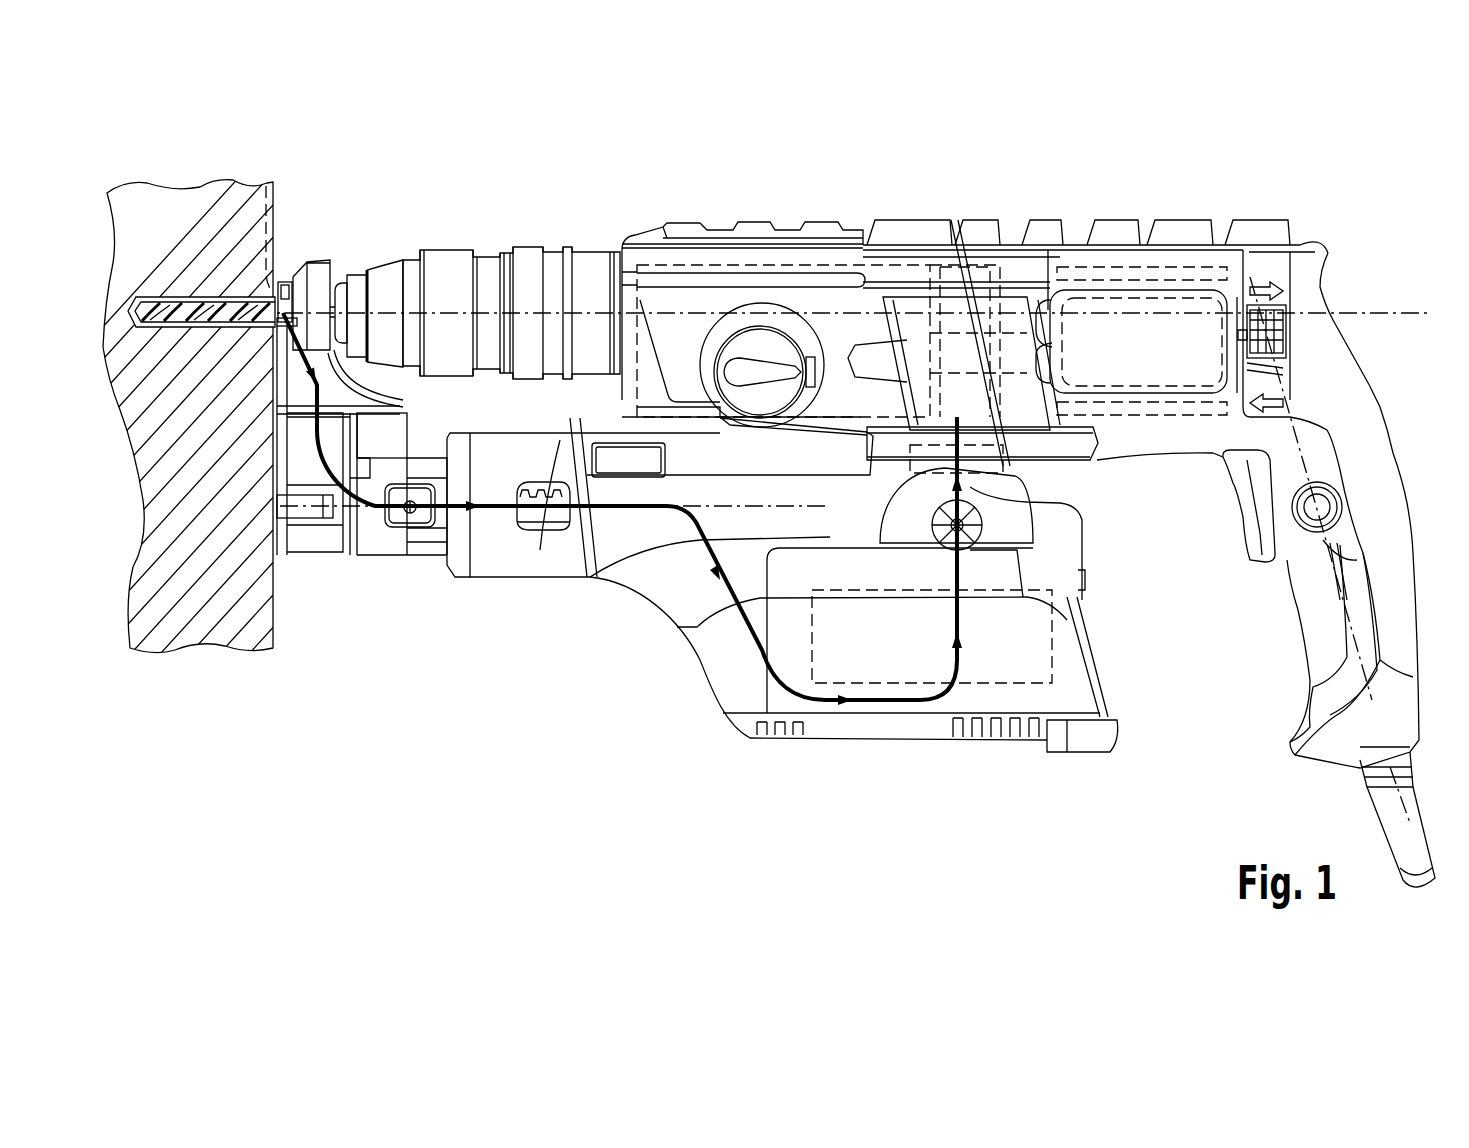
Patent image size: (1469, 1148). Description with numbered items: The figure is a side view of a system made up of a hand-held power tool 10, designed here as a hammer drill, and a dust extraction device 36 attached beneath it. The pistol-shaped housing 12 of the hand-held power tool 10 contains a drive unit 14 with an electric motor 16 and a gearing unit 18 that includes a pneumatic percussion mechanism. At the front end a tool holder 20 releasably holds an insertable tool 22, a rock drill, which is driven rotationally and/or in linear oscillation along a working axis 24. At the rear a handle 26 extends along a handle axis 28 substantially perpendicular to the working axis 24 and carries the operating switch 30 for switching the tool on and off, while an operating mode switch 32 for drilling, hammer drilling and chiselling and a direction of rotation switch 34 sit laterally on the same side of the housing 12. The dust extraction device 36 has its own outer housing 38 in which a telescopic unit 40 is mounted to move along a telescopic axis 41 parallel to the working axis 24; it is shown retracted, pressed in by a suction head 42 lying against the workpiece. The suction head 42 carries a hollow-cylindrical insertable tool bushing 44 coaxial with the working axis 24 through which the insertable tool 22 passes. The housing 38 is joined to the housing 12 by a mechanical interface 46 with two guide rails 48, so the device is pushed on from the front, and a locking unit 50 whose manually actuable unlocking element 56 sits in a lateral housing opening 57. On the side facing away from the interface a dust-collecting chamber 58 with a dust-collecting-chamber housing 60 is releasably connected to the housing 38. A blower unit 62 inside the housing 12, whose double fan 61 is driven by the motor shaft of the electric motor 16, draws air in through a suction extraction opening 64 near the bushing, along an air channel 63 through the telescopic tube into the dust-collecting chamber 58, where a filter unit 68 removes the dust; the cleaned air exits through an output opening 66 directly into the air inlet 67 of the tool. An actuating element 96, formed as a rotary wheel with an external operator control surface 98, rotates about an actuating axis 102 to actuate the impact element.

The hand-held power tool 10 is at (1364, 160).
The housing 12 is at (1015, 240).
The drive unit 14 is at (1075, 240).
The electric motor 16 is at (1152, 290).
The gearing unit 18 is at (803, 258).
The tool holder 20 is at (447, 220).
The insertable tool 22 is at (210, 305).
The working axis 24 is at (1380, 313).
The handle 26 is at (1380, 520).
The handle axis 28 is at (1307, 458).
The operating switch 30 is at (1253, 562).
The operating mode switch 32 is at (762, 340).
The direction of rotation switch 34 is at (1283, 370).
The dust extraction device 36 is at (584, 660).
The housing 38 is at (668, 588).
The telescopic unit 40 is at (428, 588).
The telescopic axis 41 is at (243, 507).
The suction head 42 is at (314, 246).
The insertable tool bushing 44 is at (298, 246).
The mechanical interface 46 is at (672, 520).
The guide rails 48 is at (810, 438).
The locking unit 50 is at (575, 461).
The unlocking element 56 is at (620, 455).
The lateral housing opening 57 is at (617, 470).
The dust-collecting chamber 58 is at (745, 760).
The dust-collecting-chamber housing 60 is at (888, 712).
The fan 61 is at (976, 262).
The blower unit 62 is at (944, 251).
The air channel 63 is at (960, 578).
The suction extraction opening 64 is at (267, 186).
The output opening 66 is at (970, 482).
The air inlet 67 is at (1003, 452).
The filter unit 68 is at (1055, 628).
The actuating element 96 is at (975, 530).
The operator control surface 98 is at (990, 543).
The actuating axis 102 is at (938, 530).